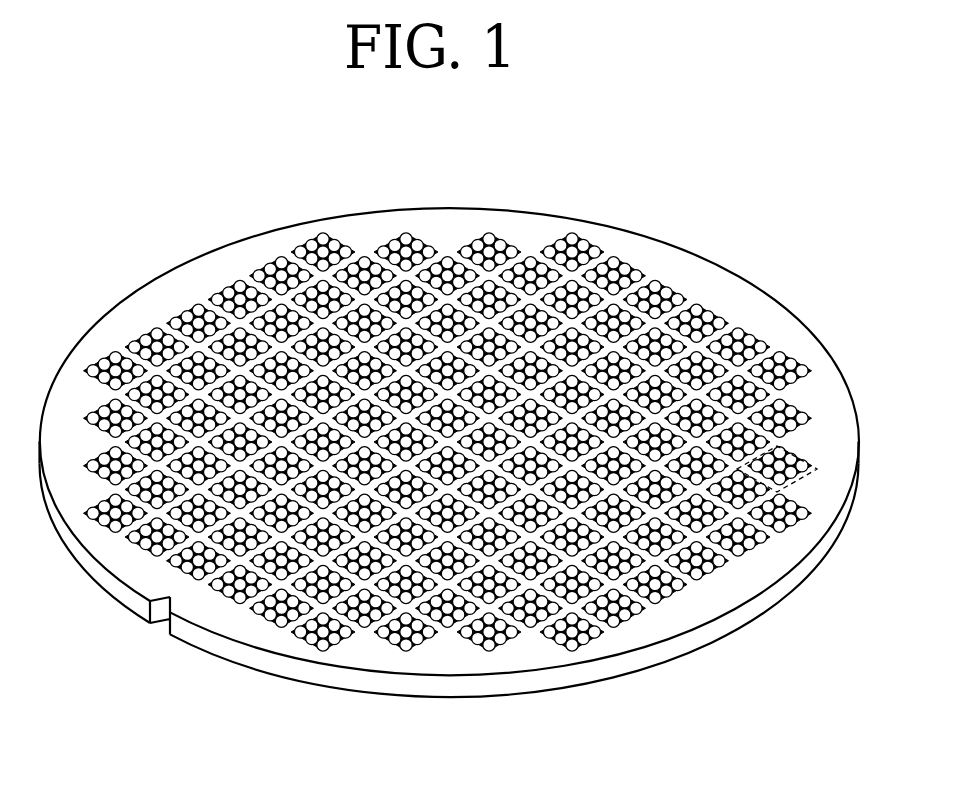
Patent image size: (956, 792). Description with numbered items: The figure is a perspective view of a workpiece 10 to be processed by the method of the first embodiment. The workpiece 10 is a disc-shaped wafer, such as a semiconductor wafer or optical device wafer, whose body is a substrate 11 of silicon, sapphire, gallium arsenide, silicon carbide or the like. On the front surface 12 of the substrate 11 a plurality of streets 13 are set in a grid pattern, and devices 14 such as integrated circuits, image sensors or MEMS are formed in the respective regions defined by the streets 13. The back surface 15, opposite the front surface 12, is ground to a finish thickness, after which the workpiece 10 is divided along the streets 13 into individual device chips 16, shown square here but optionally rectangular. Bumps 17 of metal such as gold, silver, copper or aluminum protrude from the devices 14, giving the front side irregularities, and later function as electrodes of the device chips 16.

The workpiece 10 is at (449, 437).
The substrate 11 is at (449, 480).
The front surface 12 is at (757, 313).
The streets 13 is at (466, 446).
The devices 14 is at (550, 643).
The back surface 15 is at (633, 678).
The device chips 16 is at (800, 482).
The bumps 17 is at (466, 246).